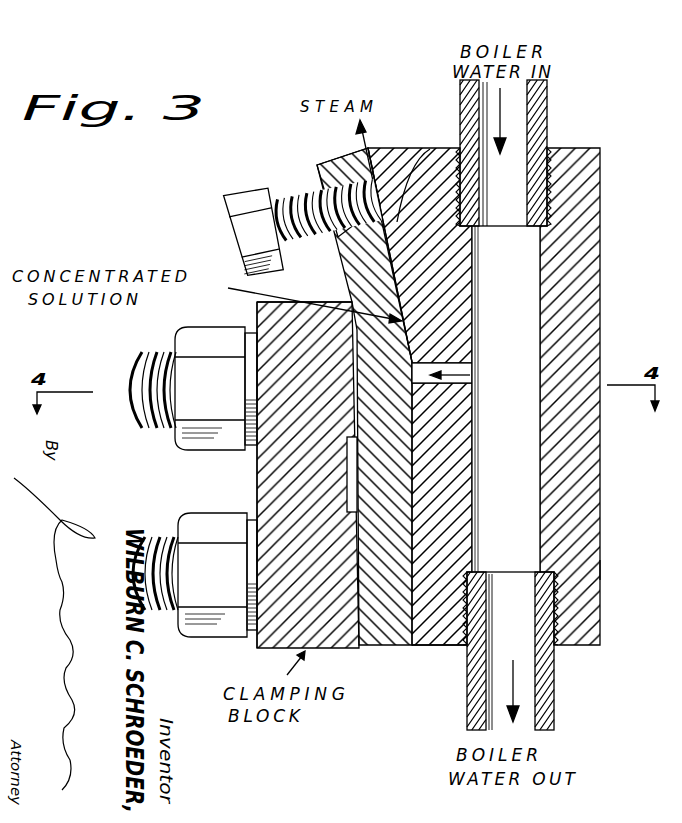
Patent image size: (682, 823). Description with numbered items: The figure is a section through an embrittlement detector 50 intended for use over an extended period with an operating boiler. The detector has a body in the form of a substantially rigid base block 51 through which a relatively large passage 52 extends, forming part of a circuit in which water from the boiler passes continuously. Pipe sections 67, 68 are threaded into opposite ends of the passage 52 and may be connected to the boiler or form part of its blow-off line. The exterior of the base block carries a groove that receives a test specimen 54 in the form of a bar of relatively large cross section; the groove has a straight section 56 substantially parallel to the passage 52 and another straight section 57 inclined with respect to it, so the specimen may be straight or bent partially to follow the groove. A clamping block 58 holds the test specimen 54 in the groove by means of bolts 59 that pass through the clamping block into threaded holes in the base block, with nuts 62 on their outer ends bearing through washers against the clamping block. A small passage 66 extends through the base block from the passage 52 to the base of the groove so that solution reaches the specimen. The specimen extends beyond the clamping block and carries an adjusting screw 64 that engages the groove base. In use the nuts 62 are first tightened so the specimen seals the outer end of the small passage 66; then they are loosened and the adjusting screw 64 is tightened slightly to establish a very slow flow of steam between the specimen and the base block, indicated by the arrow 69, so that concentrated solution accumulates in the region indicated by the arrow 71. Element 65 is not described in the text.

The embrittlement detector 50 is at (250, 461).
The base block 51 is at (600, 513).
The passage 52 is at (536, 246).
The test specimen 54 is at (353, 278).
The straight section 56 is at (418, 597).
The straight section 57 is at (420, 148).
The clamping block 58 is at (257, 487).
The bolts 59 is at (143, 430).
The nuts 62 is at (219, 626).
The adjusting screw 64 is at (288, 183).
The block side 65 is at (641, 566).
The small passage 66 is at (462, 360).
The pipe section 67 is at (528, 113).
The pipe section 68 is at (554, 700).
The arrow 69 is at (364, 147).
The arrow 71 is at (247, 294).